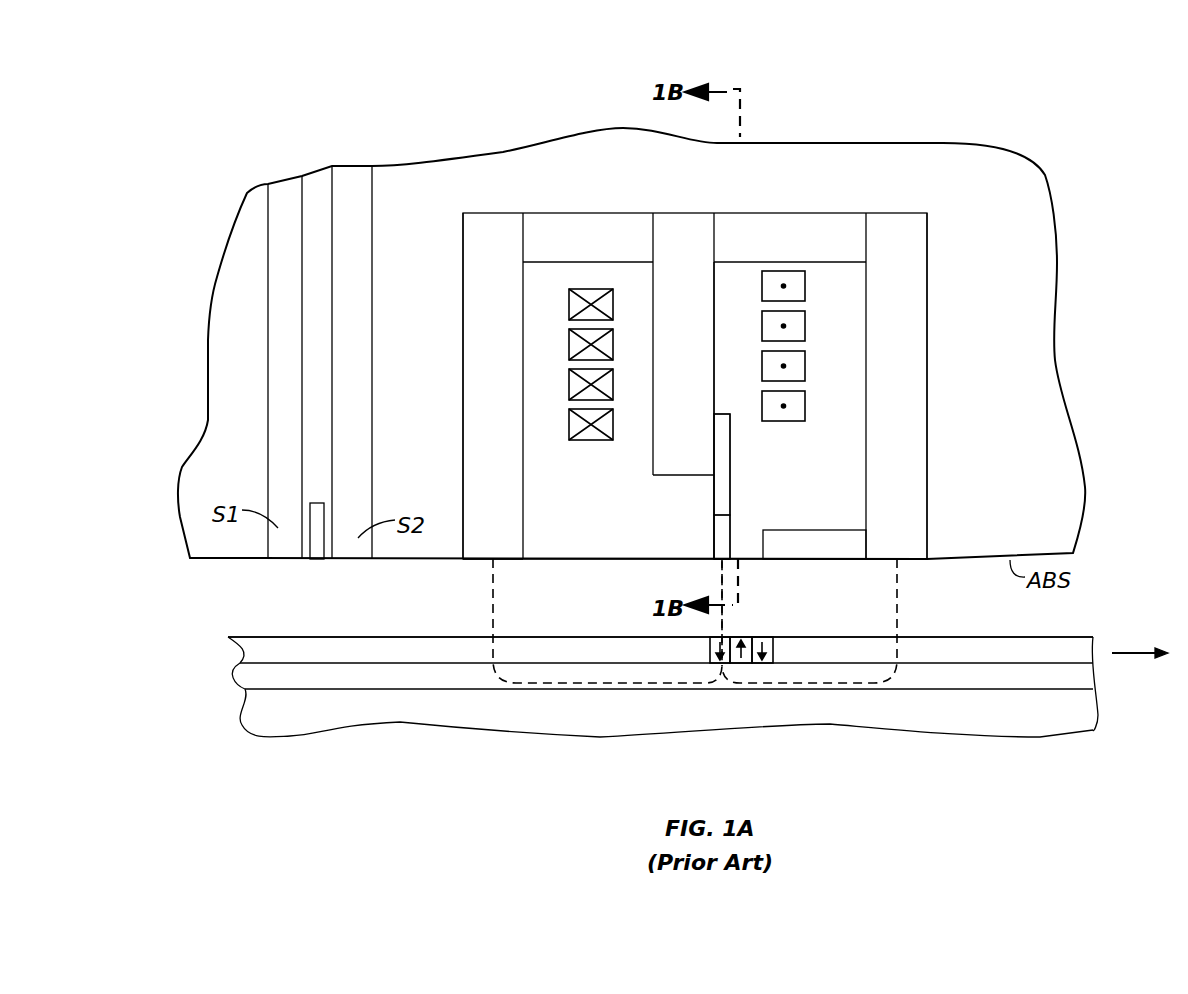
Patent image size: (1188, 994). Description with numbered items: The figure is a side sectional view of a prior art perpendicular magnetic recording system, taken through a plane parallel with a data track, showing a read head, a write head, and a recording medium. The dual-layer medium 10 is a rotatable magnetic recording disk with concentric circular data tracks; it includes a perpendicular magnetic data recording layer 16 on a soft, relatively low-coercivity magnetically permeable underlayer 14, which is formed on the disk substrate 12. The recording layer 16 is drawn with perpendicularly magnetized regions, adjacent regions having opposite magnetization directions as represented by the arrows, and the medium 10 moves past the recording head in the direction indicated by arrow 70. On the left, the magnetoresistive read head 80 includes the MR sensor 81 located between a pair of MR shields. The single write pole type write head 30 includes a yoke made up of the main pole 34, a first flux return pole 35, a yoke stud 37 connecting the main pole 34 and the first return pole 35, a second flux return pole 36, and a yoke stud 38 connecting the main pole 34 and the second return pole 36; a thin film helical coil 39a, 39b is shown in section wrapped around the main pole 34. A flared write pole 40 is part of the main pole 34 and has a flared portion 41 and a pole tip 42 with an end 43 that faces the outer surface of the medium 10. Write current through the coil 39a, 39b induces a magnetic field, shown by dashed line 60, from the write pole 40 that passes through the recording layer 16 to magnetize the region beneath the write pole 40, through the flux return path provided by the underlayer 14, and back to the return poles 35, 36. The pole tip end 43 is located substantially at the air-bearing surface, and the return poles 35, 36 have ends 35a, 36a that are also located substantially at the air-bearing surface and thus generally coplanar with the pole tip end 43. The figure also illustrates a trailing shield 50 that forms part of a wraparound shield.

The dual-layer medium 10 is at (313, 745).
The disk substrate 12 is at (255, 717).
The soft underlayer (SUL) 14 is at (248, 684).
The perpendicular magnetic data recording layer (RL) 16 is at (247, 655).
The write head 30 is at (927, 73).
The main pole 34 is at (708, 302).
The first flux return pole 35 is at (470, 288).
The end of first return pole 35a is at (478, 563).
The second flux return pole 36 is at (918, 395).
The end of second return pole 36a is at (913, 560).
The yoke stud 37 is at (567, 224).
The yoke stud 38 is at (745, 224).
The thin film helical coil 39a is at (583, 287).
The thin film helical coil 39b is at (807, 277).
The flared write pole (WP) 40 is at (718, 413).
The flared portion 41 is at (722, 486).
The pole tip 42 is at (720, 540).
The pole tip end 43 is at (727, 563).
The trailing shield (TS) 50 is at (813, 528).
The magnetic field 60 is at (537, 687).
The arrow 70 is at (1137, 655).
The magnetoresistive (MR) read head 80 is at (390, 148).
The MR sensor 81 is at (317, 502).